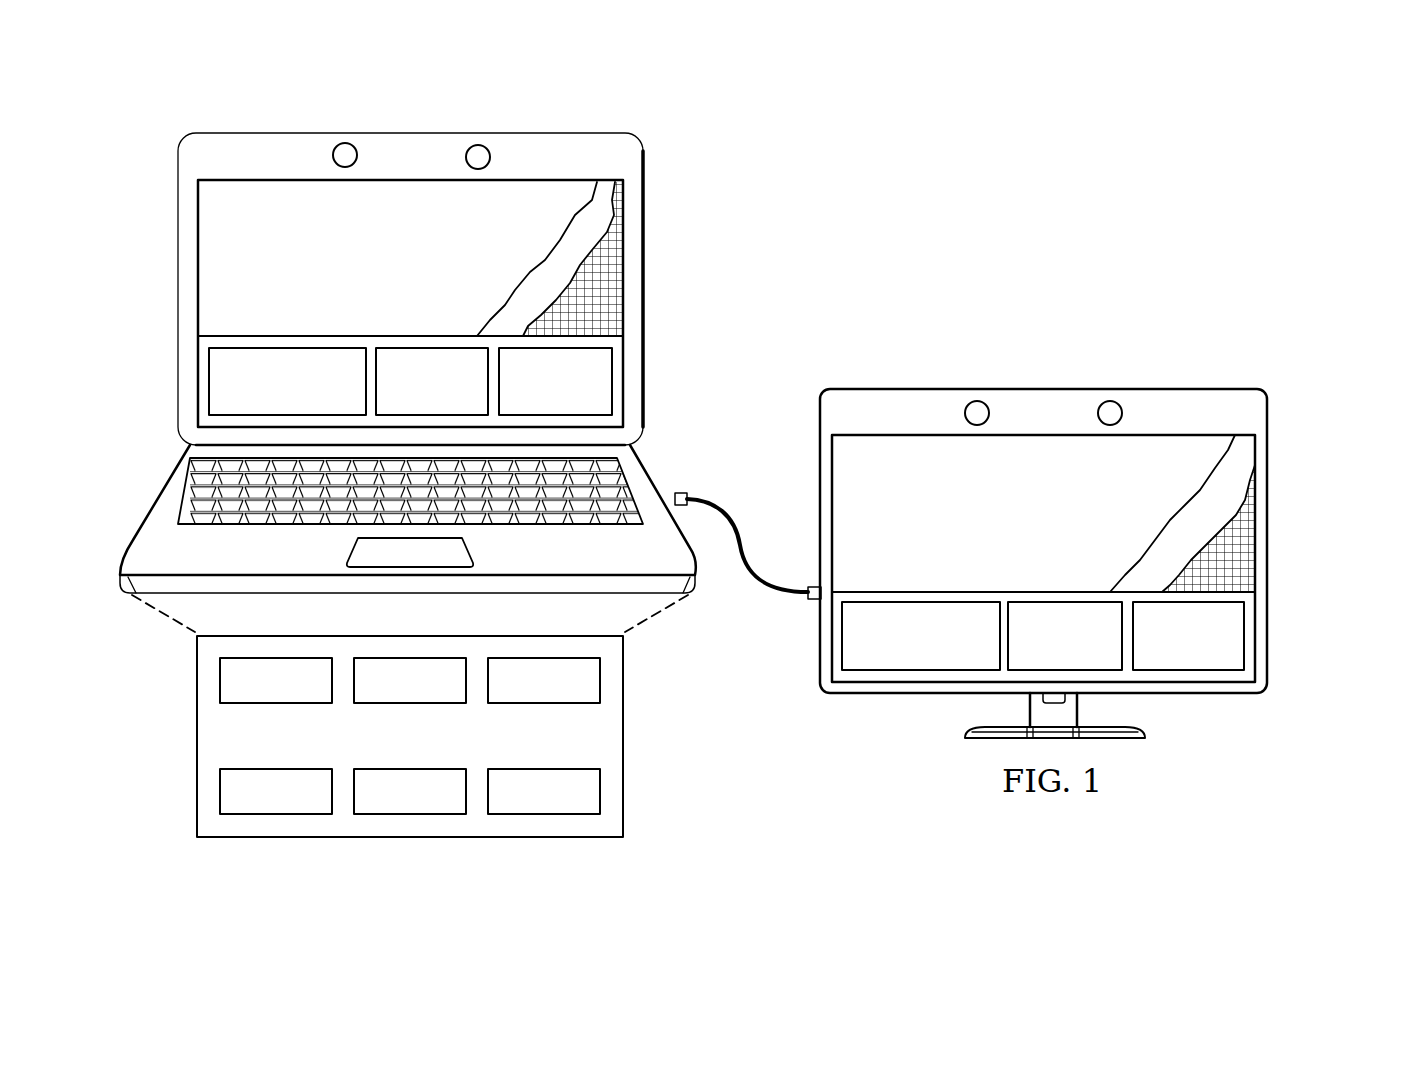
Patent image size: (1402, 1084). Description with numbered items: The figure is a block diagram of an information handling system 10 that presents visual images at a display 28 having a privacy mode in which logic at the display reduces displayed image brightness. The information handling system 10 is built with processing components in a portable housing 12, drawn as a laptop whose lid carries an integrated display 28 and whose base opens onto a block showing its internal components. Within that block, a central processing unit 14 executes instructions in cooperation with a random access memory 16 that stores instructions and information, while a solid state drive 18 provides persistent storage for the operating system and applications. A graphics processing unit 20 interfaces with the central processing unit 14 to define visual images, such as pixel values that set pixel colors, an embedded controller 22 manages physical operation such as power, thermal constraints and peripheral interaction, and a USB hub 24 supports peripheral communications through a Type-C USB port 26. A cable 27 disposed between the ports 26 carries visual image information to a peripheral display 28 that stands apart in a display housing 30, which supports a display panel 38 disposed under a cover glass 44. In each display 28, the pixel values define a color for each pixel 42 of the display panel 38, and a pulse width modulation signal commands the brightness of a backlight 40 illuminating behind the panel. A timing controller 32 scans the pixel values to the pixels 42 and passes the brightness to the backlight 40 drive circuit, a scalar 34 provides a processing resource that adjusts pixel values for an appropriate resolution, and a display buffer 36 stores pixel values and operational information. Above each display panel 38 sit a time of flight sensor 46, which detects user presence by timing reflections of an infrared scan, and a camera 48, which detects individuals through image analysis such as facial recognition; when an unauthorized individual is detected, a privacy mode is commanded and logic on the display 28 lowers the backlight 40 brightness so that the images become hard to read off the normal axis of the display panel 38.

The information handling system 10 is at (410, 845).
The portable housing 12 is at (597, 133).
The central processing unit 14 is at (253, 703).
The random access memory 16 is at (300, 769).
The solid state drive 18 is at (387, 703).
The graphics processing unit 20 is at (435, 769).
The embedded controller 22 is at (521, 703).
The USB hub 24 is at (568, 769).
The port 26 is at (775, 630).
The cable 27 is at (735, 546).
The display 28 is at (1240, 360).
The display housing 30 is at (1223, 694).
The timing controller 32 is at (265, 347).
The scalar 34 is at (432, 347).
The display buffer 36 is at (612, 383).
The display panel 38 is at (991, 531).
The backlight 40 is at (1313, 431).
The pixels 42 is at (1290, 552).
The cover glass 44 is at (882, 457).
The time of flight sensor 46 is at (977, 401).
The camera 48 is at (1110, 401).